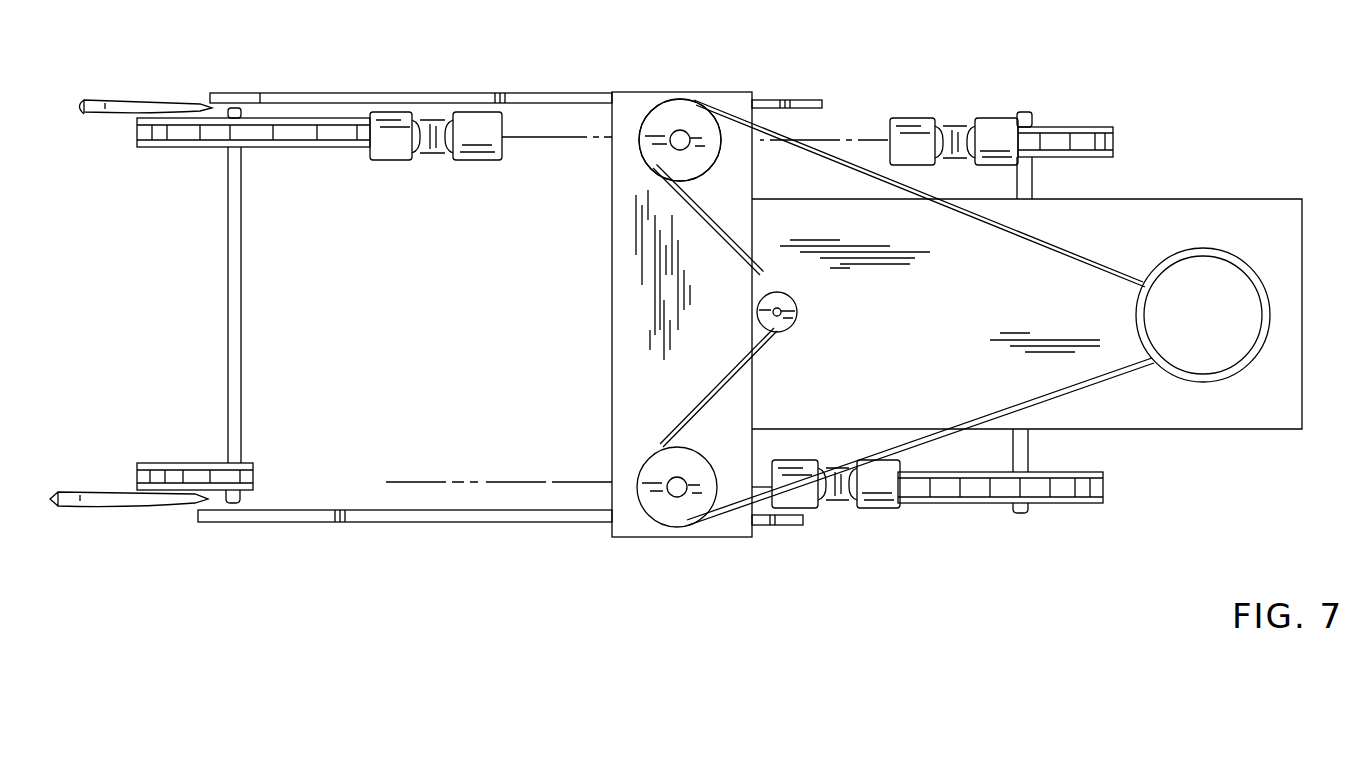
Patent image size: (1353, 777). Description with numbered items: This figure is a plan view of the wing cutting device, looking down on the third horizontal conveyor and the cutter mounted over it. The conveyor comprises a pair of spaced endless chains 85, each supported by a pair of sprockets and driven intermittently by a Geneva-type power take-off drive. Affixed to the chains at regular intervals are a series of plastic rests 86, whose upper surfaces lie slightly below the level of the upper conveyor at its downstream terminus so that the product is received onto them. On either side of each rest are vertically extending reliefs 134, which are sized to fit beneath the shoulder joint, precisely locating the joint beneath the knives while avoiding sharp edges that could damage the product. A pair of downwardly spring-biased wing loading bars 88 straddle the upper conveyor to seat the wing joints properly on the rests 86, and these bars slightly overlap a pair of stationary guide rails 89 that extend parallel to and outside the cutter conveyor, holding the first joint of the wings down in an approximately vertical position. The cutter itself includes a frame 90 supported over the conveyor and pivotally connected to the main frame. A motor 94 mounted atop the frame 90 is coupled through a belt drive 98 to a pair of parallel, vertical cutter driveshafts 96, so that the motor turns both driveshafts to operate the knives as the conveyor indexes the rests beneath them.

The endless chains 85 is at (944, 505).
The rests 86 is at (987, 120).
The wing loading bars 88 is at (97, 506).
The stationary guide rails 89 is at (440, 93).
The frame 90 is at (1228, 412).
The motor 94 is at (1191, 327).
The cutter driveshafts 96 is at (680, 130).
The belt drive 98 is at (1007, 228).
The vertically extending reliefs 134 is at (430, 151).